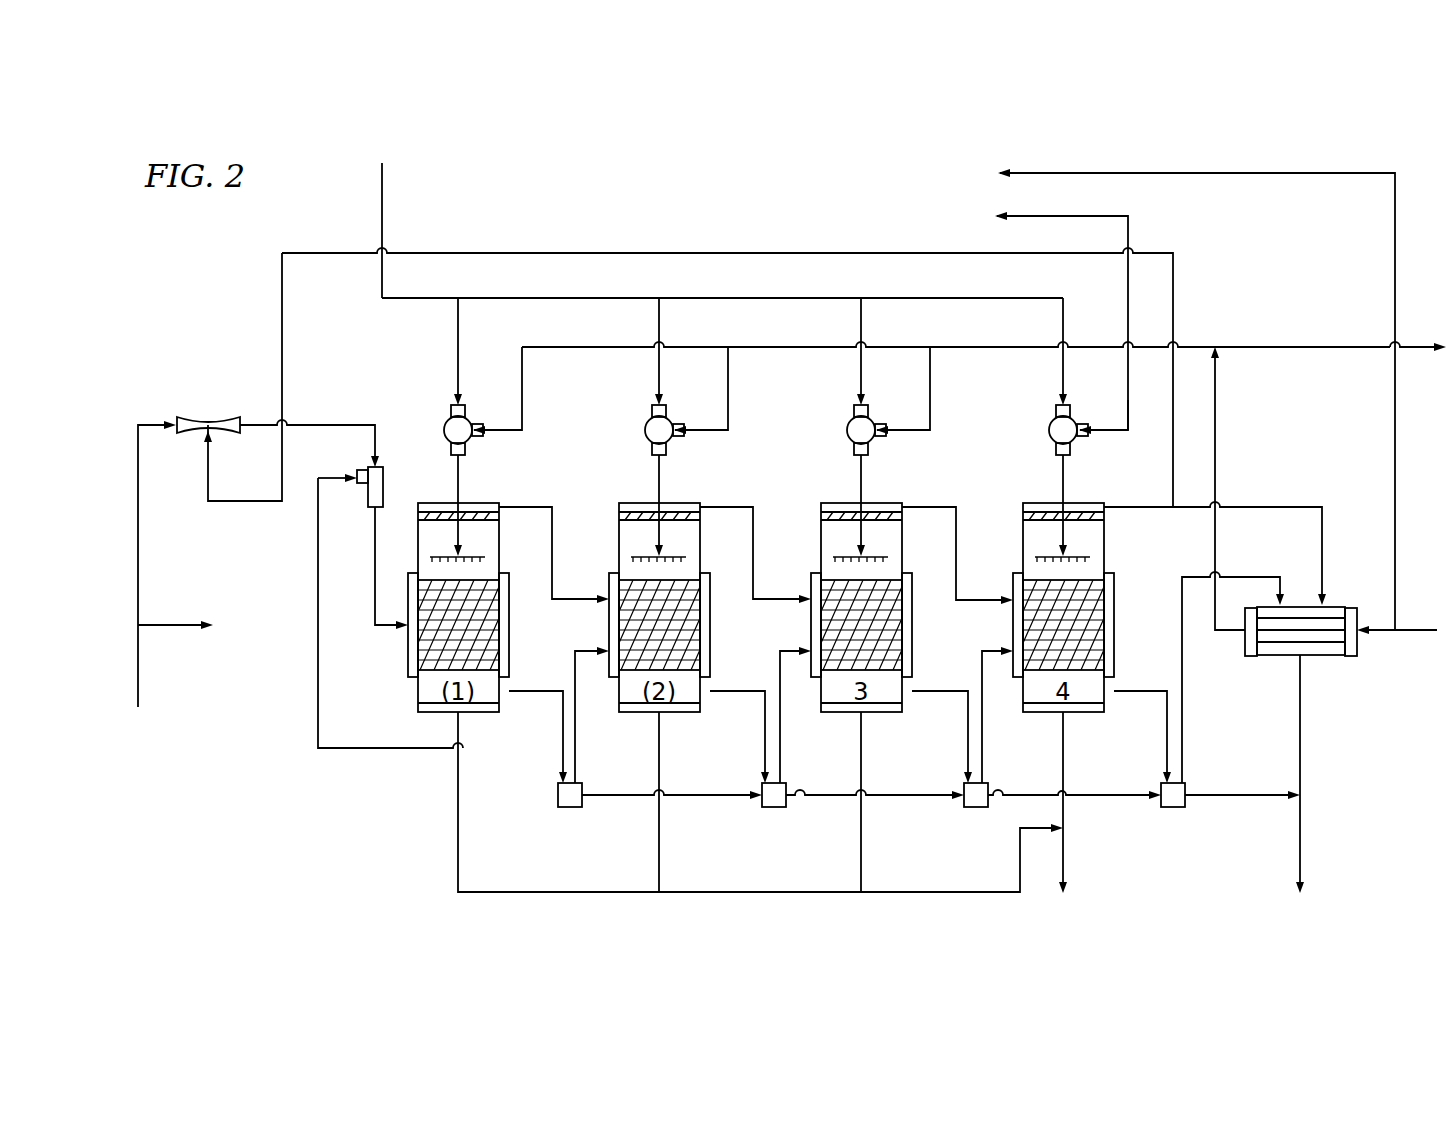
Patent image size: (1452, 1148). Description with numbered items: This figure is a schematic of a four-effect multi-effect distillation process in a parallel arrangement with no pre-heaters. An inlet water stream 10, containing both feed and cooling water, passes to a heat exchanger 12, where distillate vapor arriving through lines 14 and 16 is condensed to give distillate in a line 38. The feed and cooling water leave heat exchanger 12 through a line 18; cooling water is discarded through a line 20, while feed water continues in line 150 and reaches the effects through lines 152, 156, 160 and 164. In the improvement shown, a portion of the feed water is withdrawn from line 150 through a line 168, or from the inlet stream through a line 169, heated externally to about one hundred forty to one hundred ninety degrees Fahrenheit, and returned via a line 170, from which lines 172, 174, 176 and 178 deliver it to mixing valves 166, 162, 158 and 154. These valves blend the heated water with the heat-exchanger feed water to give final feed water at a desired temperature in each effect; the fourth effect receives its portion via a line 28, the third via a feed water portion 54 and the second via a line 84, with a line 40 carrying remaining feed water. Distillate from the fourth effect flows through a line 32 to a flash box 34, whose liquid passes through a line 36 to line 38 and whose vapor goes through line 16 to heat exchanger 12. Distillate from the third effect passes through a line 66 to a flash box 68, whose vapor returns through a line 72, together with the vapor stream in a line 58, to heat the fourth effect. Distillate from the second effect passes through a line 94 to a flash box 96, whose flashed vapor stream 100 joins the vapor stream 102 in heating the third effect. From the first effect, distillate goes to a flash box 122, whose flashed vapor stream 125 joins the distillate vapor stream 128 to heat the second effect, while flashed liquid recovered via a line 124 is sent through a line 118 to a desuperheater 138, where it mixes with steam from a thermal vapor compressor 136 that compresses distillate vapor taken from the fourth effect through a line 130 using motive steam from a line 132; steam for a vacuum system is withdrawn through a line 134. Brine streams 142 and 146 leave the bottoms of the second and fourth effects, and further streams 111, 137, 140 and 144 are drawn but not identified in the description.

The inlet water stream 10 is at (1410, 630).
The heat exchanger 12 is at (1322, 656).
The line 14 is at (1283, 507).
The line 16 is at (1197, 575).
The line 18 is at (1215, 445).
The line 20 is at (1358, 347).
The line 28 is at (1066, 468).
The line 32 is at (1167, 733).
The flash box 34 is at (1172, 808).
The line 36 is at (1258, 793).
The line 38 is at (1302, 770).
The line 40 is at (1110, 797).
The feed water portion 54 is at (863, 467).
The line 58 is at (958, 515).
The line 66 is at (965, 735).
The flash box 68 is at (973, 808).
The line 72 is at (983, 720).
The line 84 is at (661, 467).
The line 94 is at (765, 737).
The flash box 96 is at (772, 808).
The flashed vapor stream 100 is at (782, 720).
The vapor stream 102 is at (755, 515).
The bed 1 inlet line 111 is at (460, 470).
The line 118 is at (375, 610).
The flash box 122 is at (562, 810).
The line 124 is at (405, 752).
The flashed vapor stream 125 is at (577, 720).
The distillate vapor stream 128 is at (553, 515).
The line 130 is at (1175, 287).
The line 132 is at (138, 670).
The line 134 is at (163, 625).
The thermal vapor compressor 136 is at (213, 417).
The line 137 is at (308, 425).
The desuperheater 138 is at (383, 488).
The bed 1 bottom line 140 is at (458, 853).
The brine stream 142 is at (659, 853).
The bed 3 bottom line 144 is at (862, 853).
The brine stream 146 is at (1063, 858).
The line 150 is at (1196, 347).
The line 152 is at (1130, 410).
The mixing valve 154 is at (1050, 425).
The line 156 is at (930, 392).
The mixing valve 158 is at (850, 425).
The line 160 is at (728, 392).
The mixing valve 162 is at (648, 425).
The line 164 is at (523, 392).
The mixing valve 166 is at (446, 425).
The line 168 is at (1130, 230).
The line 169 is at (1097, 172).
The line 170 is at (382, 232).
The line 172 is at (458, 335).
The line 174 is at (659, 335).
The line 176 is at (861, 335).
The line 178 is at (1065, 316).